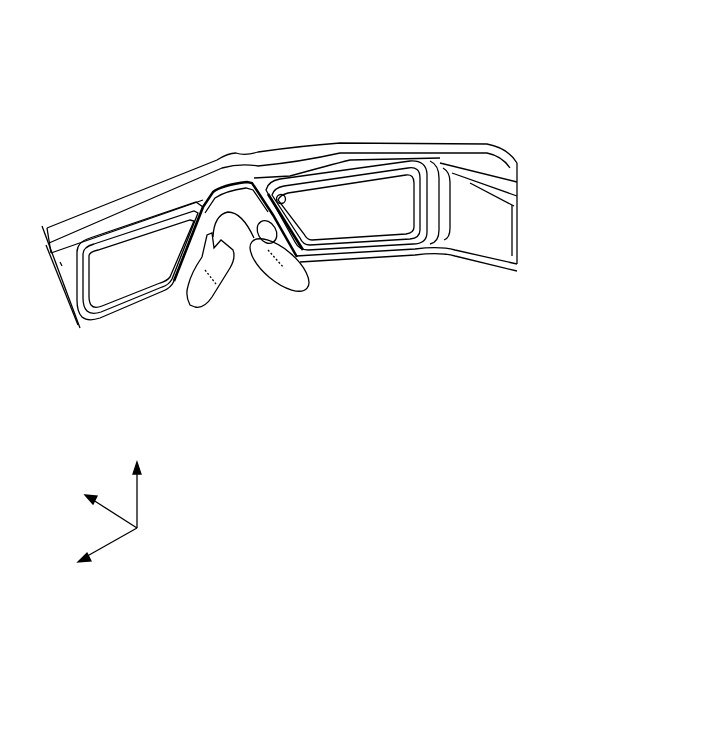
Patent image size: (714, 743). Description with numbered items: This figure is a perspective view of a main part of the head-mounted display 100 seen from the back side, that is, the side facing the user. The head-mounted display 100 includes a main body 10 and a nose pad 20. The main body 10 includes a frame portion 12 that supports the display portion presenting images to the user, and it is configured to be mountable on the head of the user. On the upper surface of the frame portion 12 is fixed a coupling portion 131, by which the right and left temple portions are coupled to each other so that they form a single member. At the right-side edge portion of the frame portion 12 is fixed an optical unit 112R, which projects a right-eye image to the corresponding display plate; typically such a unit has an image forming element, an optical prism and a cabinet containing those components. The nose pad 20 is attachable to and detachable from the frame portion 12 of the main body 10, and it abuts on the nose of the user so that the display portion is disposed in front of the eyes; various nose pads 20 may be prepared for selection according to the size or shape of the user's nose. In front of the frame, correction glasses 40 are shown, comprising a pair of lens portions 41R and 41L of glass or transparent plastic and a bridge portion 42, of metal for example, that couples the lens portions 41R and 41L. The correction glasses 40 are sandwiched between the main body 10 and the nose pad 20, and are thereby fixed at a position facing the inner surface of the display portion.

The head-mounted display 100 is at (568, 82).
The main body 10 is at (487, 136).
The frame portion 12 is at (395, 157).
The coupling portion 131 is at (71, 220).
The optical unit 112R is at (484, 238).
The correction glasses 40 is at (309, 94).
The lens portion 41L is at (170, 230).
The bridge portion 42 is at (250, 181).
The lens portion 41R is at (307, 203).
The nose pad 20 is at (297, 296).